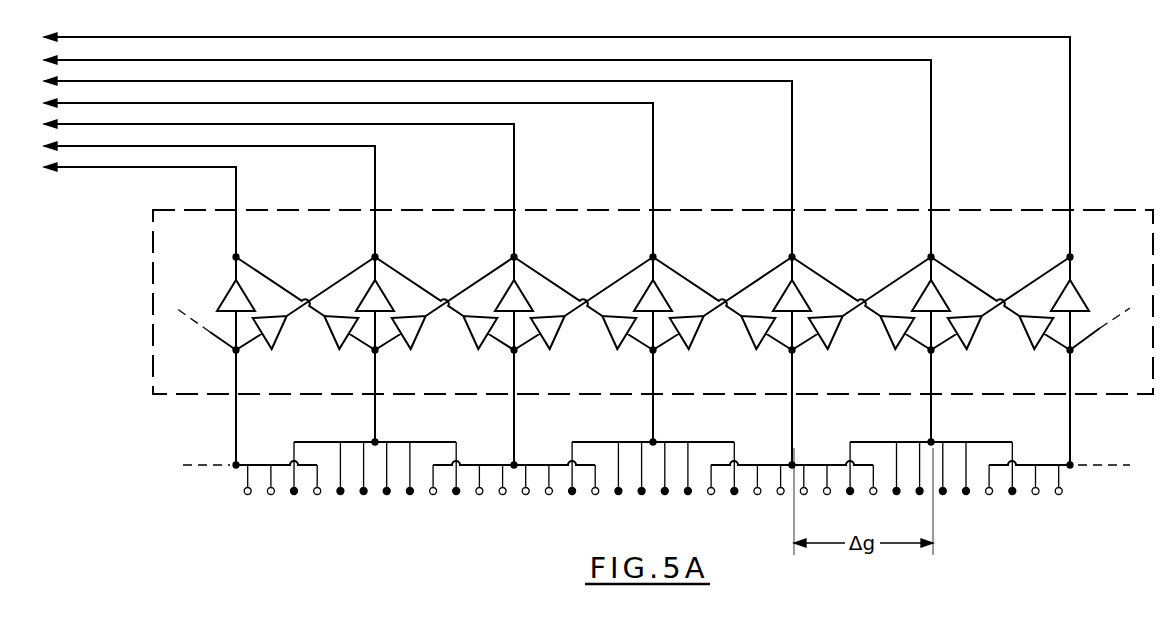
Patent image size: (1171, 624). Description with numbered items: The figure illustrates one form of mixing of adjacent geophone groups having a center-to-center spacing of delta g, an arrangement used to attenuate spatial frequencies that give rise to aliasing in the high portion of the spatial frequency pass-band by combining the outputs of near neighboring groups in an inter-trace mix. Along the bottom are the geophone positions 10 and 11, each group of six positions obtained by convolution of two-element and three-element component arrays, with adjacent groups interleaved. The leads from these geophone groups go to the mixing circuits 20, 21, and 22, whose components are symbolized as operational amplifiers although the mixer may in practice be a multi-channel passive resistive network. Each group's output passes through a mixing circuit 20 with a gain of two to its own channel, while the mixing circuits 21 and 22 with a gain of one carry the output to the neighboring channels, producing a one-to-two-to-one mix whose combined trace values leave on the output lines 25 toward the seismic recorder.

The output lines 25 is at (697, 141).
The mixing circuit 20 is at (505, 297).
The mixing circuit 22 is at (552, 315).
The mixing circuit 21 is at (470, 332).
The geophone positions 11 is at (294, 494).
The geophone positions 10 is at (433, 494).